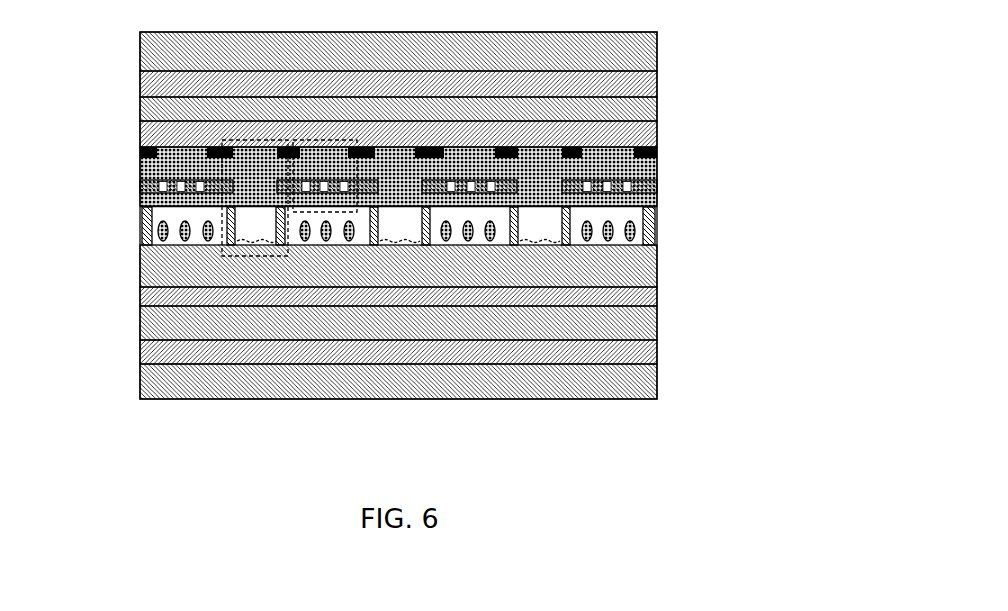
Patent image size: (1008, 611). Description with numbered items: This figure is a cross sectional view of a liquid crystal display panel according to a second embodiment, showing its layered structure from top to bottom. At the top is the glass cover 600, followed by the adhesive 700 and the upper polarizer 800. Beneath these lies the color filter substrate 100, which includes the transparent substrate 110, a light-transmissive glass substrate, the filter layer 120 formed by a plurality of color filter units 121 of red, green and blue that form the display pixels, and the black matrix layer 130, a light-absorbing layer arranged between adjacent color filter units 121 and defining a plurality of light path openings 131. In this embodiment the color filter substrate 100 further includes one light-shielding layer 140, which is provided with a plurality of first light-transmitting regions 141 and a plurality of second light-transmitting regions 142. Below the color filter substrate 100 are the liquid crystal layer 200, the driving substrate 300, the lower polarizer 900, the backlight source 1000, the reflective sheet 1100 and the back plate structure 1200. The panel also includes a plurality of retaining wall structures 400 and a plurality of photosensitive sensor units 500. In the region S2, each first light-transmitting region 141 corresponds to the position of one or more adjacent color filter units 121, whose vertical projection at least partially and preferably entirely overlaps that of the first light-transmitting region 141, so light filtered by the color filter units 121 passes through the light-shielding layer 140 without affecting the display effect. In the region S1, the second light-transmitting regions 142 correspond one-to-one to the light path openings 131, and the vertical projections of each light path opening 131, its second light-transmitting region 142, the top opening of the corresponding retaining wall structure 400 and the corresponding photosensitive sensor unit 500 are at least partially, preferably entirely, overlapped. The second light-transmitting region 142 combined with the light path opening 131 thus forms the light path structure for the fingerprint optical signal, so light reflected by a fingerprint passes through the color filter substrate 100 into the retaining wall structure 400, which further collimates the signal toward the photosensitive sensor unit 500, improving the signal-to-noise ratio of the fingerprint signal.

The glass cover 600 is at (140, 54).
The adhesive 700 is at (140, 89).
The upper polarizer 800 is at (140, 115).
The transparent substrate 110 is at (657, 135).
The black matrix layer 130 is at (657, 187).
The light-shielding layer 140 is at (657, 157).
The color filter unit 121 is at (453, 178).
The filter layer 120 is at (736, 33).
The color filter substrate 100 is at (814, 45).
The liquid crystal layer 200 is at (142, 237).
The retaining wall structure 400 is at (572, 222).
The photosensitive sensor unit 500 is at (550, 247).
The driving substrate 300 is at (140, 267).
The lower polarizer 900 is at (140, 300).
The backlight source 1000 is at (140, 327).
The reflective sheet 1100 is at (140, 364).
The back plate structure 1200 is at (140, 390).
The light path opening 131 is at (241, 152).
The second light-transmitting region 142 is at (255, 155).
The first light-transmitting region 141 is at (327, 152).
The region S1 is at (255, 188).
The region S2 is at (325, 166).